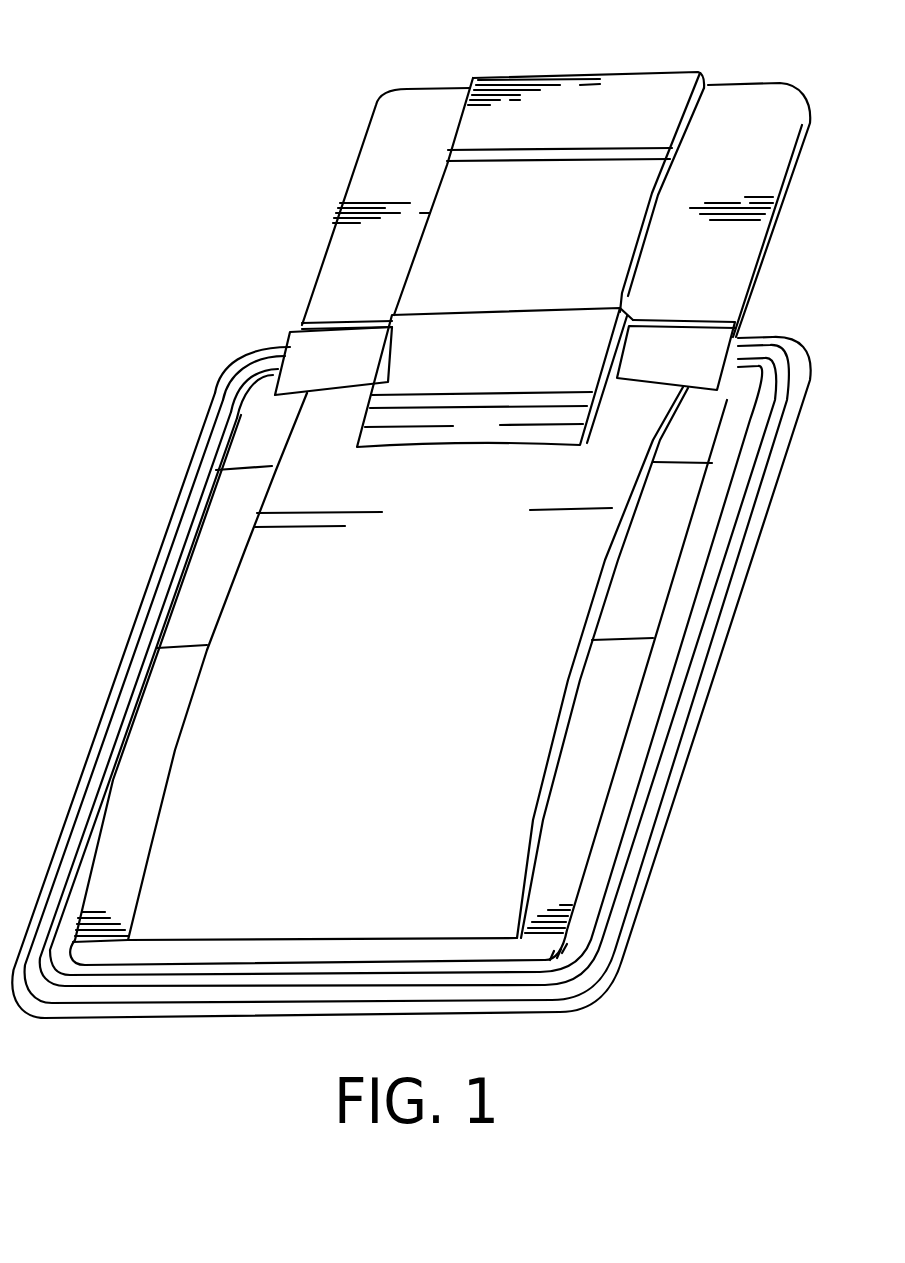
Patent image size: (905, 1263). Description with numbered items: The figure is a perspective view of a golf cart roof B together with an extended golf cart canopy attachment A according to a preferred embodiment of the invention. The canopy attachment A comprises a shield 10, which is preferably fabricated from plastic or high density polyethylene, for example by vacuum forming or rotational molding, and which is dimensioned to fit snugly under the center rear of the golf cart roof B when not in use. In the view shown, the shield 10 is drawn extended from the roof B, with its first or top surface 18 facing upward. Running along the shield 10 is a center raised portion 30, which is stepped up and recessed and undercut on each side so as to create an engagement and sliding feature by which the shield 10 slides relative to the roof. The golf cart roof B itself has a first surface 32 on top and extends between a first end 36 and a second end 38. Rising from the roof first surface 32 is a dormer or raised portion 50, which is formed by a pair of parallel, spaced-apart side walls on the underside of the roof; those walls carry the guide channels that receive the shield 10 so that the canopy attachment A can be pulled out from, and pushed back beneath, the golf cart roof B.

The shield 10 is at (330, 278).
The first or top surface 18 is at (380, 125).
The center raised portion 30 is at (600, 72).
The dormer or raised portion 50 is at (513, 322).
The first surface 32 is at (200, 733).
The first end 36 is at (258, 375).
The second end 38 is at (166, 983).
The golf cart canopy attachment A is at (247, 165).
The golf cart roof B is at (132, 560).